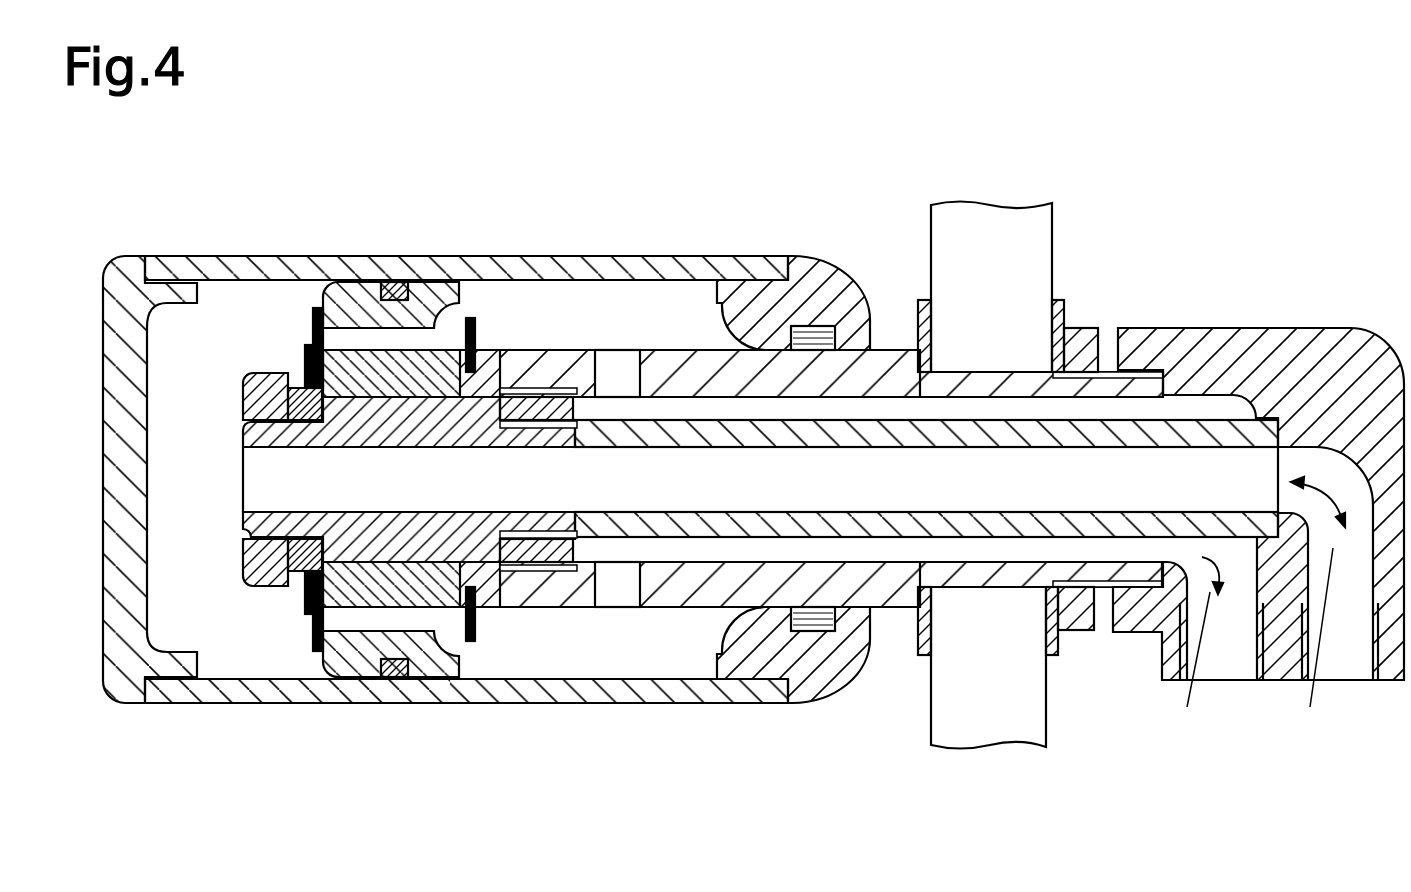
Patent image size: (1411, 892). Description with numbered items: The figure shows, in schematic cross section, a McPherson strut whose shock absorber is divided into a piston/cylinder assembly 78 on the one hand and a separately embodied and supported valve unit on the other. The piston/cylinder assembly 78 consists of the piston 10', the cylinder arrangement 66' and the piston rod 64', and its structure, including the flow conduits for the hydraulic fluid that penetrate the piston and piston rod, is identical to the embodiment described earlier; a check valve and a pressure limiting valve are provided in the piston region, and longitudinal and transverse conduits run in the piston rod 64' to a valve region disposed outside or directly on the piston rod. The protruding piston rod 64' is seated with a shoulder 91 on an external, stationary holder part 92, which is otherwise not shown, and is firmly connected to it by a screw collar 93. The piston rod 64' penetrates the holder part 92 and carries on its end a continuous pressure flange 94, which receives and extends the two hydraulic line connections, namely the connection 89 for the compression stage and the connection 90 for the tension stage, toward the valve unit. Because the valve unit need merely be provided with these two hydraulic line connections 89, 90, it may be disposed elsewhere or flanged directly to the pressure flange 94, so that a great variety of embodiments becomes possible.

The piston 10' is at (337, 548).
The cylinder arrangement 66' is at (466, 548).
The piston rod 64' is at (734, 574).
The piston/cylinder assembly 78 is at (760, 708).
The shoulder 91 is at (970, 367).
The holder part 92 is at (1027, 733).
The screw collar 93 is at (1077, 622).
The pressure flange 94 is at (1176, 367).
The hydraulic line connection for the tension stage 90 is at (1228, 668).
The hydraulic line connection for the compression stage 89 is at (1350, 662).